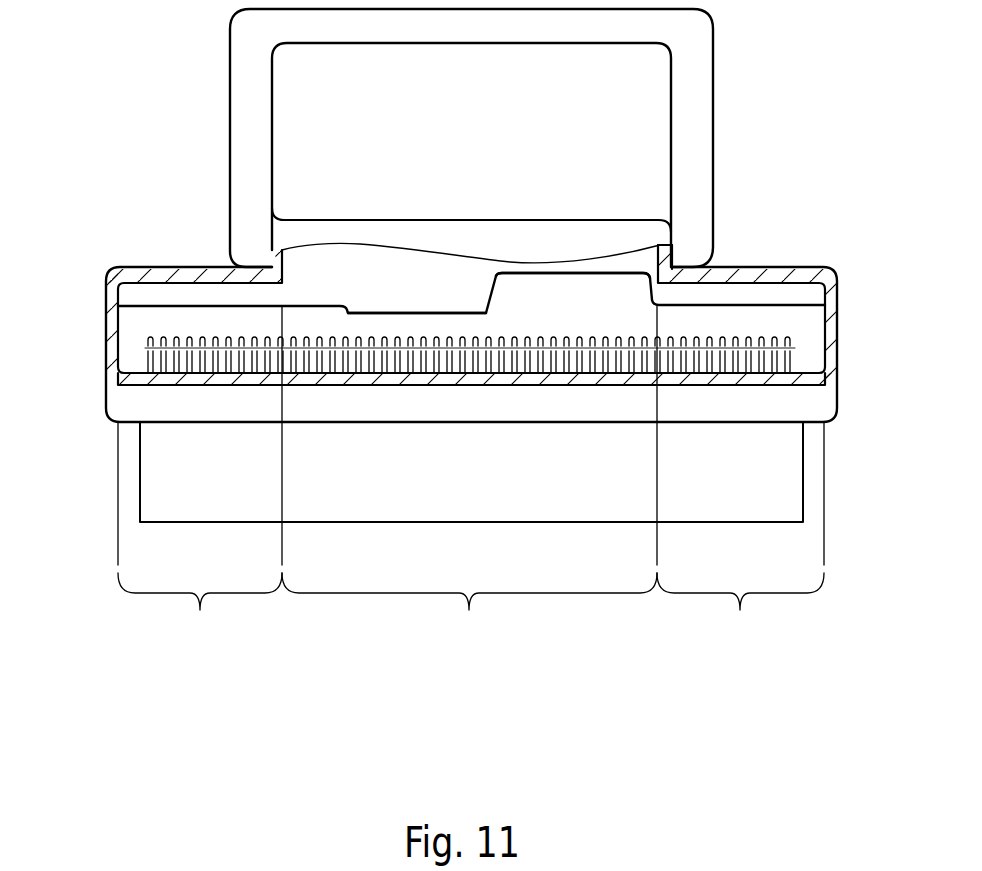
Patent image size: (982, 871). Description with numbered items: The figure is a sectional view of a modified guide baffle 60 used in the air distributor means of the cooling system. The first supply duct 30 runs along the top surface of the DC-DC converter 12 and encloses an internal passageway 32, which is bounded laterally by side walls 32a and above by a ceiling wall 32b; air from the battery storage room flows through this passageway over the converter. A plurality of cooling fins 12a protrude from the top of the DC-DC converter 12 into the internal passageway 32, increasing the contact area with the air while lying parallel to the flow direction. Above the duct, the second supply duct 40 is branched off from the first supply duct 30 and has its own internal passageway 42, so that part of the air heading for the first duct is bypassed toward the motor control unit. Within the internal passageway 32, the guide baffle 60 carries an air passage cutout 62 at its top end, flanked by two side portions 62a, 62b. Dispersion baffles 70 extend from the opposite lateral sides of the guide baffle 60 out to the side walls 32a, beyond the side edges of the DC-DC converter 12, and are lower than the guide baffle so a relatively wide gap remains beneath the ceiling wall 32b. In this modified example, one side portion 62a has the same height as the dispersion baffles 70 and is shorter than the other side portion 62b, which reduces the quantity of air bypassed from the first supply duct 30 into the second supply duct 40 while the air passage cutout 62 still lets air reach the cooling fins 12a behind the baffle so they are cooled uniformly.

The DC-DC converter 12 is at (165, 493).
The cooling fins 12a is at (173, 357).
The first supply duct 30 is at (786, 270).
The internal passageway 32 is at (810, 295).
The side walls 32a is at (822, 336).
The ceiling wall 32b is at (202, 286).
The second supply duct 40 is at (672, 130).
The internal passageway 42 is at (643, 266).
The guide baffle 60 is at (469, 609).
The air passage cutout 62 is at (443, 304).
The side portion 62a is at (332, 302).
The side portion 62b is at (575, 273).
The dispersion baffles 70 is at (471, 475).